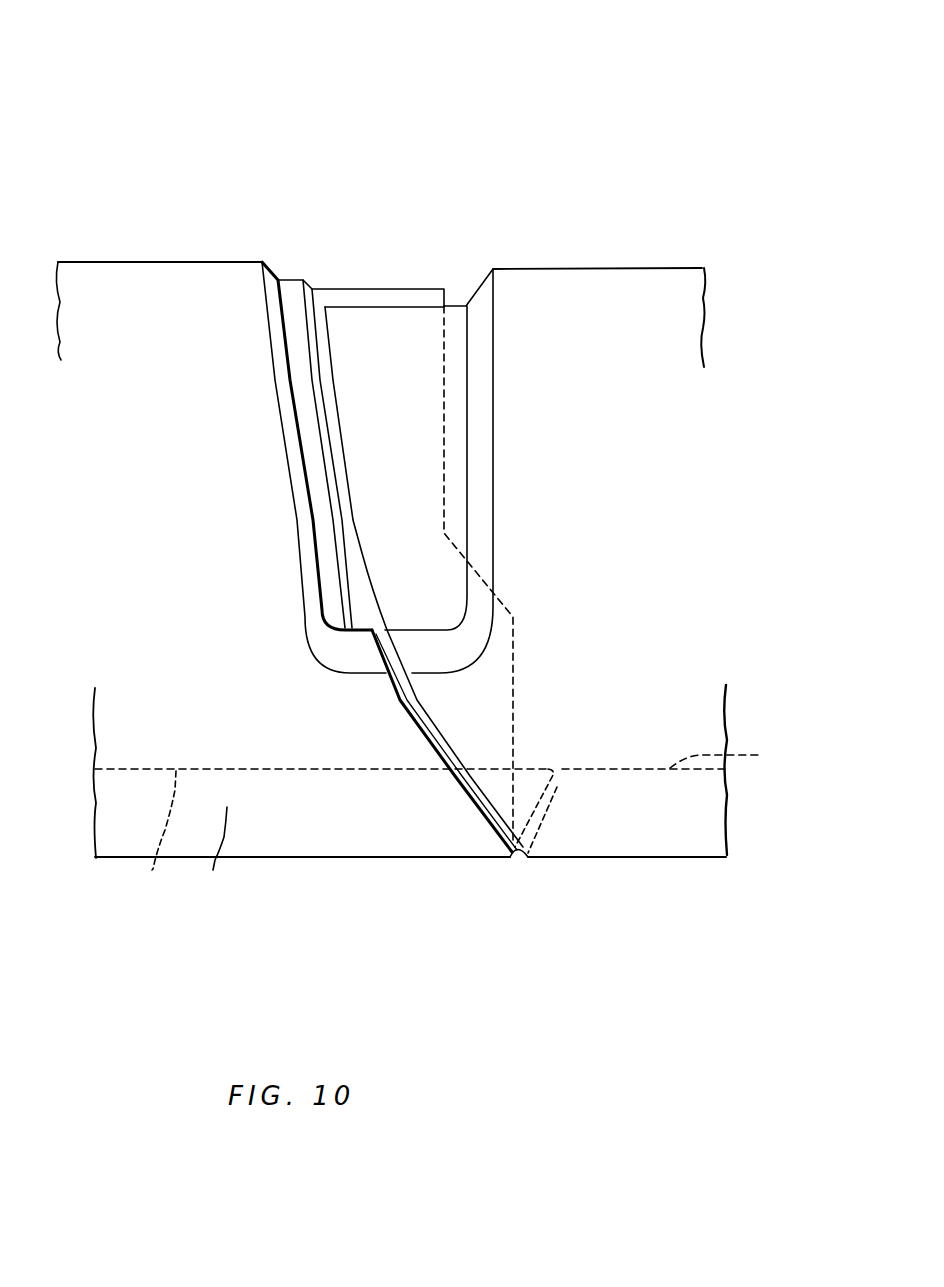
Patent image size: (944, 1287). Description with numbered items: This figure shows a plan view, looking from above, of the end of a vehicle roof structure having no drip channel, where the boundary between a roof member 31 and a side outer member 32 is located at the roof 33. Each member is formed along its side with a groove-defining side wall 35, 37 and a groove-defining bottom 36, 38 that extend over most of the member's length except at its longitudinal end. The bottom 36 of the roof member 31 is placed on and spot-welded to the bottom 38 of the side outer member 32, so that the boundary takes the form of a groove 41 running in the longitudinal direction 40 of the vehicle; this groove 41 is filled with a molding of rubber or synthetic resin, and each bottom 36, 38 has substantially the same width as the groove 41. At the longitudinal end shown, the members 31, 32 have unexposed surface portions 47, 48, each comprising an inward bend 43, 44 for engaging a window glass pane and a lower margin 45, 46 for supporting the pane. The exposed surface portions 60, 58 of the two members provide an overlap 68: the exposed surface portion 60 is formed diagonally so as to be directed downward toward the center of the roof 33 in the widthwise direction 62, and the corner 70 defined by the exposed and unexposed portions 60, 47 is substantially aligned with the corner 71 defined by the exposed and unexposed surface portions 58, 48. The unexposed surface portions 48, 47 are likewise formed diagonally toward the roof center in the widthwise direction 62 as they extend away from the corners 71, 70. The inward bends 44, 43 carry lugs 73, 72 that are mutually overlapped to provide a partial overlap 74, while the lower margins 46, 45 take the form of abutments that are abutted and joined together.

The roof member 31 is at (540, 295).
The side outer member 32 is at (203, 287).
The roof 33 is at (512, 193).
The groove-defining side wall 35 is at (480, 297).
The groove-defining bottom 36 is at (415, 313).
The groove-defining side wall 37 is at (272, 290).
The groove-defining bottom 38 is at (348, 295).
The longitudinal direction 40 is at (370, 45).
The groove 41 is at (379, 280).
The inward bend 43 is at (700, 803).
The inward bend 44 is at (212, 859).
The lower margin 45 is at (446, 760).
The lower margin 46 is at (156, 841).
The unexposed surface portion 47 is at (800, 736).
The unexposed surface portion 48 is at (133, 906).
The exposed surface portion 58 is at (270, 705).
The exposed surface portion 60 is at (593, 710).
The widthwise direction 62 is at (581, 992).
The overlap 68 is at (427, 535).
The corner 70 is at (527, 858).
The corner 71 is at (510, 858).
The lug 72 is at (545, 793).
The lug 73 is at (540, 825).
The partial overlap 74 is at (541, 836).